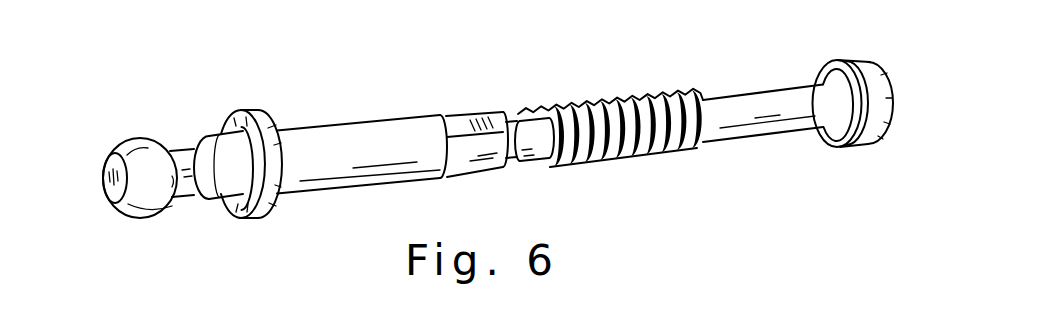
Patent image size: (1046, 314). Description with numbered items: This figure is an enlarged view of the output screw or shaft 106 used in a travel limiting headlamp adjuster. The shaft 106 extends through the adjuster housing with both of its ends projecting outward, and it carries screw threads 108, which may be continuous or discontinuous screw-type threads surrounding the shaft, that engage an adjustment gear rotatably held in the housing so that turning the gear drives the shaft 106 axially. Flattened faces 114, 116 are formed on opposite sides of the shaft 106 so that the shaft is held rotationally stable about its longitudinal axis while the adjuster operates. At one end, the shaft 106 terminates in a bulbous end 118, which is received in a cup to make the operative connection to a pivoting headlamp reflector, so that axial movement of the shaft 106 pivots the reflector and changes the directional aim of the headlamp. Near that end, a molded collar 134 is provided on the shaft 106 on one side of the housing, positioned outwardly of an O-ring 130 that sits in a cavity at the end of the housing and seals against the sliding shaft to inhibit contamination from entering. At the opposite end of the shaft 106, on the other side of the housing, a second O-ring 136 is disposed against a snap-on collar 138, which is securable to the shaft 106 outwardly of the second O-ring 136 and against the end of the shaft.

The output shaft 106 is at (424, 84).
The screw threads 108 is at (627, 93).
The flattened face 114 is at (470, 120).
The flattened face 116 is at (470, 175).
The bulbous end 118 is at (128, 150).
The O-ring 130 is at (266, 222).
The molded collar 134 is at (240, 202).
The second O-ring 136 is at (825, 62).
The snap-on collar 138 is at (867, 60).